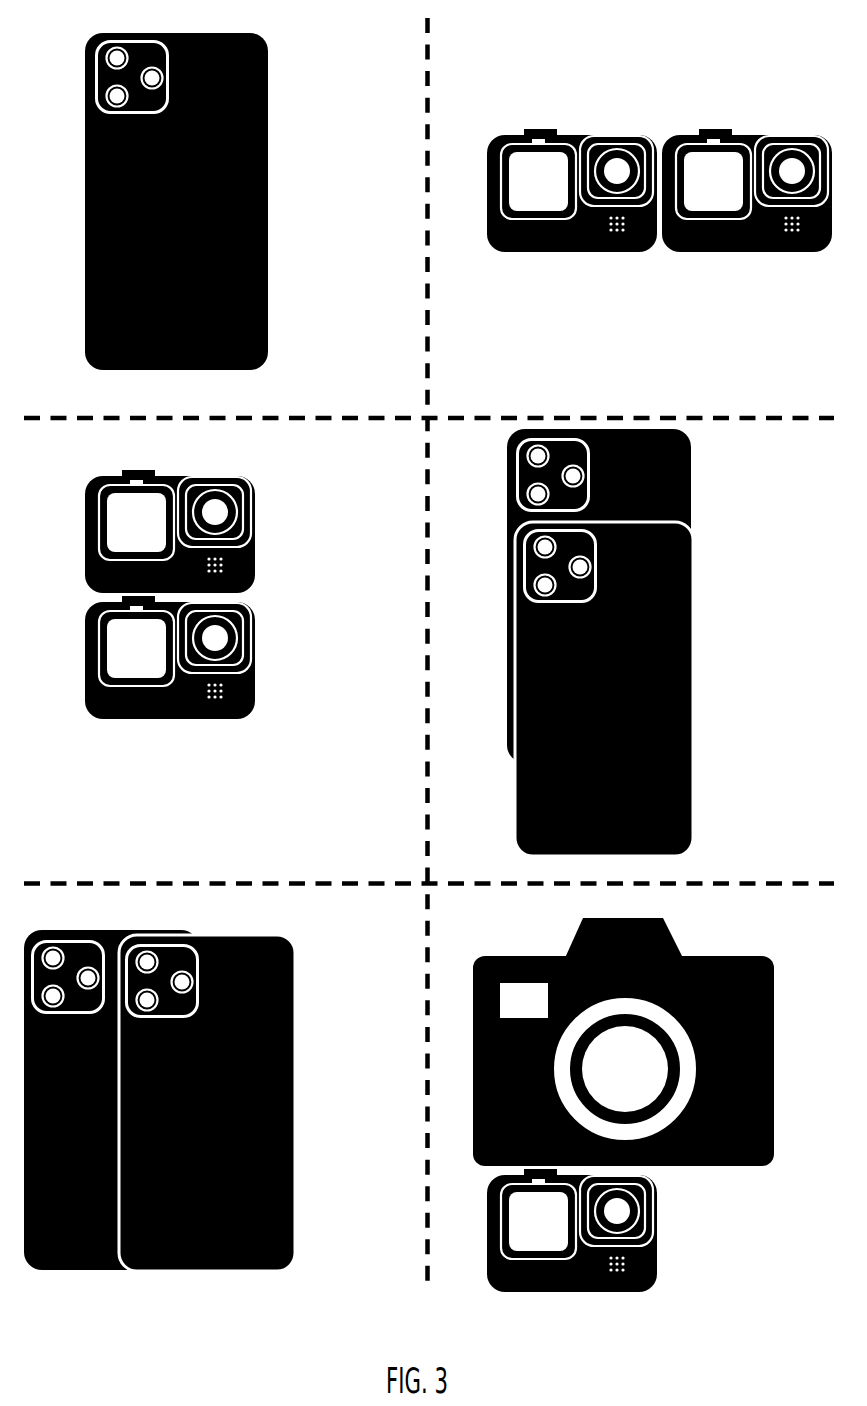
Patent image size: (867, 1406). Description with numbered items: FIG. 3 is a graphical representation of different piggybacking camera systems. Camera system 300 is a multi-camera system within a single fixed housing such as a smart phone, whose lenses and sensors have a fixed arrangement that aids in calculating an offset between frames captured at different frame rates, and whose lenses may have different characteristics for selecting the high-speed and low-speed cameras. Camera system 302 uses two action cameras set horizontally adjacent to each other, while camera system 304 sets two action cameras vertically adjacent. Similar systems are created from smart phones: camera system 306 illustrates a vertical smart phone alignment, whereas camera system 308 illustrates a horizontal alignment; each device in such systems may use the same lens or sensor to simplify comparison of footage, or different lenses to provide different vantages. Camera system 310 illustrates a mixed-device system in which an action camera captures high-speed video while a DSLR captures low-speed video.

The camera system 300 is at (286, 108).
The camera system 302 is at (693, 320).
The camera system 304 is at (248, 745).
The camera system 306 is at (755, 510).
The camera system 308 is at (348, 980).
The camera system 310 is at (724, 1275).